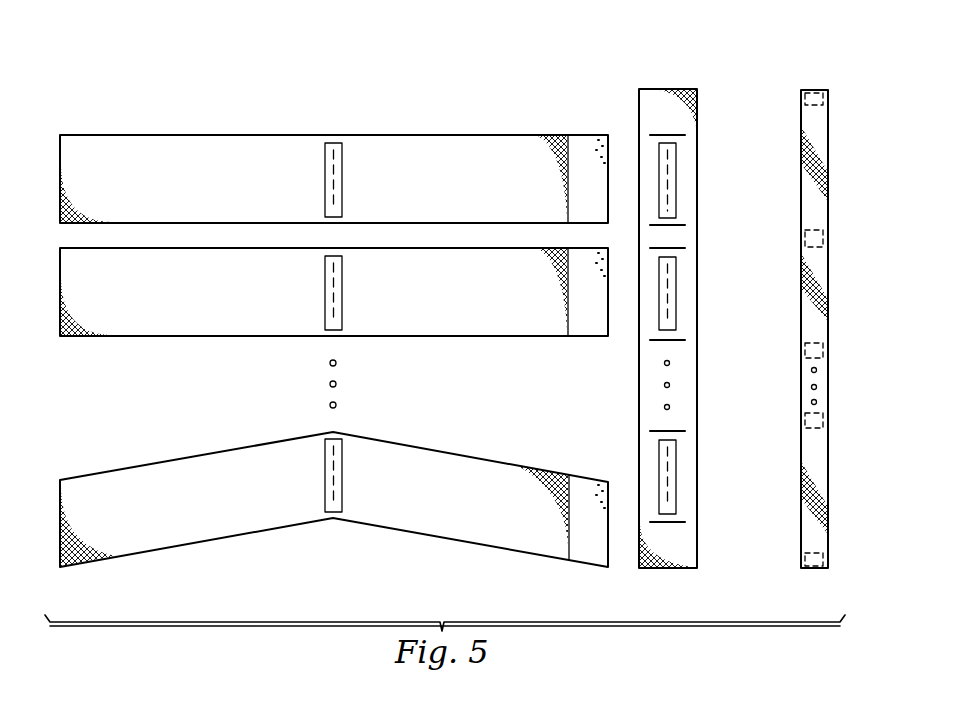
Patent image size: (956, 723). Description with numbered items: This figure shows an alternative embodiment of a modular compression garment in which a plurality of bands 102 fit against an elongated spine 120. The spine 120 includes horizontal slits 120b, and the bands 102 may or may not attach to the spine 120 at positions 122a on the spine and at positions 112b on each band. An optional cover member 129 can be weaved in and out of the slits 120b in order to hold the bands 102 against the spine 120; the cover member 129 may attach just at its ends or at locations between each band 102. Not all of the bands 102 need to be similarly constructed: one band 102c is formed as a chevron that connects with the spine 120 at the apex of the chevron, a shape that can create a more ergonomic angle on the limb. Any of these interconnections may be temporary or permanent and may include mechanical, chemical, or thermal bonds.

The band 102 is at (153, 134).
The chevron band 102c is at (155, 553).
The band attachment position 112b is at (343, 172).
The spine 120 is at (668, 88).
The horizontal slits 120b is at (667, 131).
The spine attachment position 122a is at (677, 175).
The cover member 129 is at (813, 88).